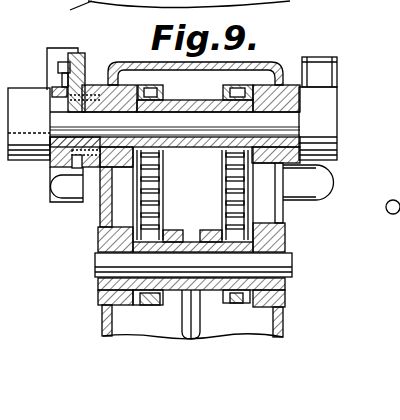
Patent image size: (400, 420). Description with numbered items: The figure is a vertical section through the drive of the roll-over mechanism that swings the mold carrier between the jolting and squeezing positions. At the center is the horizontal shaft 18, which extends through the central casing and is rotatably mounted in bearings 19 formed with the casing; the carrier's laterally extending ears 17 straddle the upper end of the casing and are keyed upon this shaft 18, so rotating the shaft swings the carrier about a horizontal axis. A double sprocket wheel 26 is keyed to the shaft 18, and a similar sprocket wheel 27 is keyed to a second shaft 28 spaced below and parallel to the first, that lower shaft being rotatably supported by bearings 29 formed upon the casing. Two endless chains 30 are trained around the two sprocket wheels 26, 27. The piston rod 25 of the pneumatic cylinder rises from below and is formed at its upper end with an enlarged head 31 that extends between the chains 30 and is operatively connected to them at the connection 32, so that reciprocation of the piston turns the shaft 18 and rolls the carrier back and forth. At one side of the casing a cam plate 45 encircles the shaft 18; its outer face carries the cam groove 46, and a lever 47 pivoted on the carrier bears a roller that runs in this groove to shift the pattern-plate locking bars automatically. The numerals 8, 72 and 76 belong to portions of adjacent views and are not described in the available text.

The fragment of adjacent figure 8 is at (167, 14).
The laterally extending ears 17 is at (17, 103).
The shaft 18 is at (260, 123).
The bearings 19 is at (103, 84).
The piston rod 25 is at (200, 322).
The double sprocket wheel 26 is at (208, 97).
The sprocket wheel 27 is at (177, 283).
The shaft 28 is at (110, 265).
The bearings 29 is at (112, 239).
The endless chains 30 is at (137, 196).
The enlarged head 31 is at (170, 220).
The operative connection 32 is at (220, 220).
The cam plate 45 is at (62, 188).
The cam groove 46 is at (77, 164).
The lever 47 is at (60, 80).
The fragment of adjacent figure 72 is at (391, 248).
The fragment of adjacent figure 76 is at (391, 196).